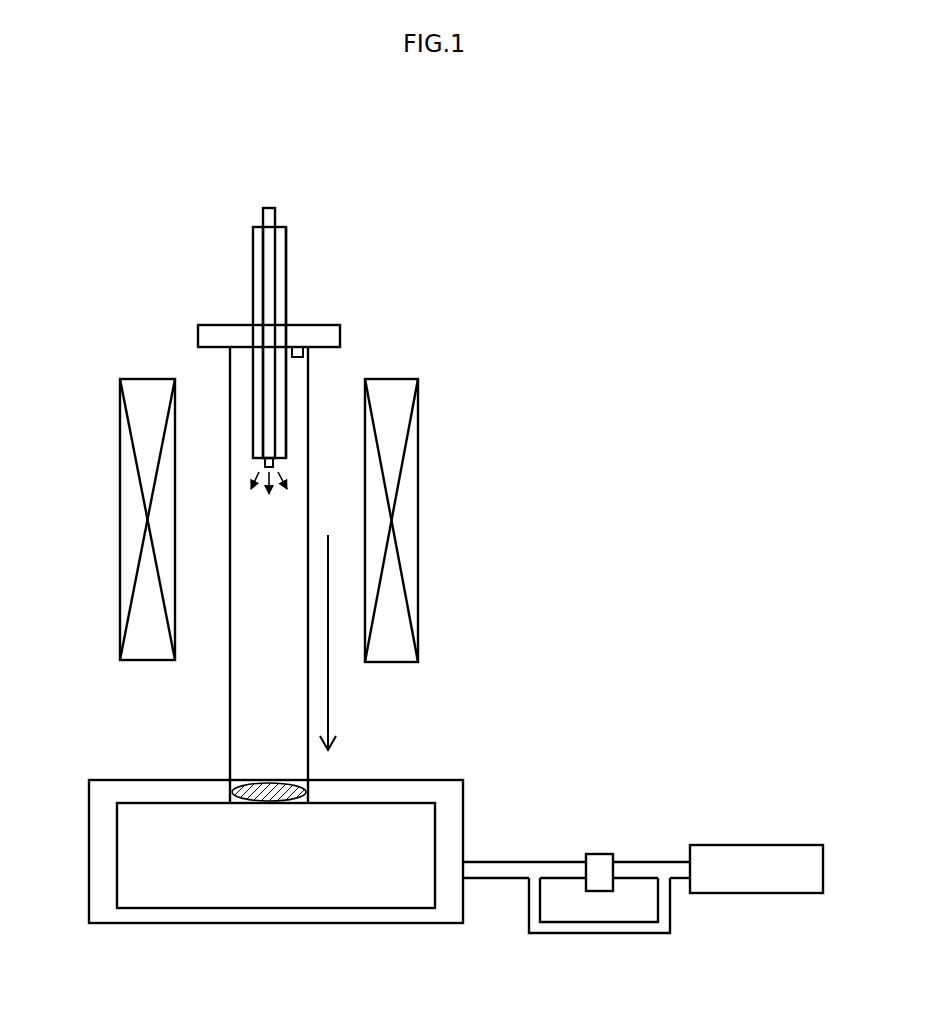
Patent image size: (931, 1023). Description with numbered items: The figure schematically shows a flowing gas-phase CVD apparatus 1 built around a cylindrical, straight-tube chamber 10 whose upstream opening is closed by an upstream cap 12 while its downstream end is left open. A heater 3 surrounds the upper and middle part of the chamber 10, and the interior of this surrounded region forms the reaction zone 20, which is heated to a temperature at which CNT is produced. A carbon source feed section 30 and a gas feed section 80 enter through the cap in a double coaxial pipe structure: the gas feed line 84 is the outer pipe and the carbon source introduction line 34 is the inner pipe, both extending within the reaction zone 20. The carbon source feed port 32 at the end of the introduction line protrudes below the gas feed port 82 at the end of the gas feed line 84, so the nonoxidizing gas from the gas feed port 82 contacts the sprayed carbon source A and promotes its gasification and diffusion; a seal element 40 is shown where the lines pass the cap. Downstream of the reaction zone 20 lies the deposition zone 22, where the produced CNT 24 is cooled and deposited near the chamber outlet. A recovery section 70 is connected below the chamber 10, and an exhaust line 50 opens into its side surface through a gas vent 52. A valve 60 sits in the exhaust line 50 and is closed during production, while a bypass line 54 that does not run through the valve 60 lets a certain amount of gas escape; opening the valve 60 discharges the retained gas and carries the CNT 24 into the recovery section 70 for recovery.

The flowing gas-phase CVD apparatus 1 is at (562, 202).
The heater 3 is at (120, 552).
The chamber 10 is at (308, 390).
The upstream cap 12 is at (212, 323).
The reaction zone 20 is at (285, 568).
The deposition zone 22 is at (285, 756).
The CNT 24 is at (255, 785).
The carbon source feed section 30 is at (280, 211).
The carbon source feed port 32 is at (262, 492).
The carbon source introduction line 34 is at (262, 258).
The seal member 40 is at (300, 350).
The exhaust line 50 is at (640, 861).
The gas vent 52 is at (462, 870).
The bypass line 54 is at (610, 935).
The valve 60 is at (595, 853).
The recovery section 70 is at (202, 924).
The gas feed section 80 is at (251, 228).
The gas feed port 82 is at (252, 468).
The gas feed line 84 is at (286, 250).
The carbon source A is at (285, 477).